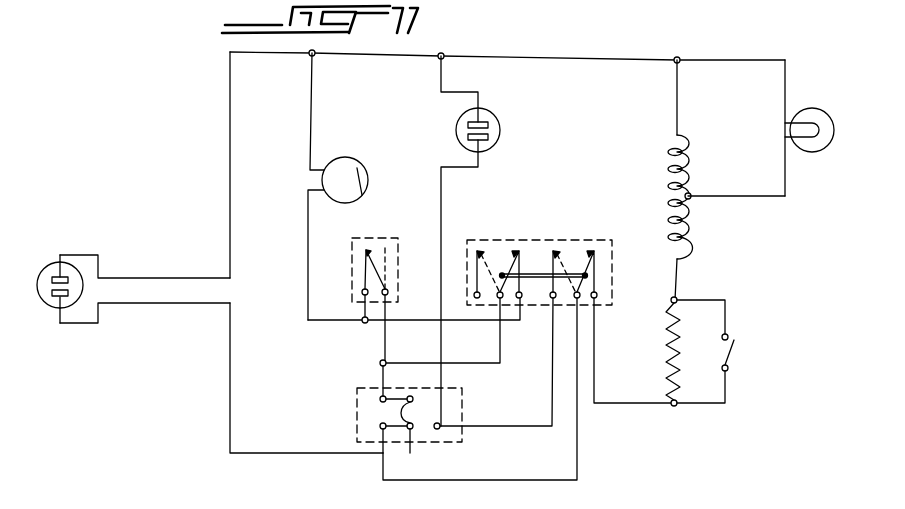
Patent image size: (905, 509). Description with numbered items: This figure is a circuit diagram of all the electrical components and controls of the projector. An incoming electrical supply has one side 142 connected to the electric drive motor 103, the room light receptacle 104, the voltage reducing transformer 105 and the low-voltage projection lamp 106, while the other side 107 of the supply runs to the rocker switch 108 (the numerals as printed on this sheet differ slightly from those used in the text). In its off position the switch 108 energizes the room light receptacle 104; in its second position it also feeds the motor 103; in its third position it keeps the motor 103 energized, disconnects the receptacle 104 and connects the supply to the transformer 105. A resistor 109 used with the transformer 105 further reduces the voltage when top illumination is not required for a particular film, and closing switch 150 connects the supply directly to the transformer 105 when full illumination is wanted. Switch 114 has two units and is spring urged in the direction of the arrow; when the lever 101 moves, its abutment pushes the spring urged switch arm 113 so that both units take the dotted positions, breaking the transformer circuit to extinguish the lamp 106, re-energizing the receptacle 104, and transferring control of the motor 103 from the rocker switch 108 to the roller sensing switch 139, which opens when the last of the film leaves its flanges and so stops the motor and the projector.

The lever 101 is at (50, 309).
The cord 107 is at (140, 303).
The one side of the incoming electrical supply 142 is at (230, 145).
The meter 103 is at (350, 162).
The lamp 104 is at (496, 122).
The roller sensing switch 139 is at (368, 240).
The switch 114 is at (531, 236).
The spring urged switch arm 113 is at (545, 270).
The coil 105 is at (668, 170).
The motor 106 is at (807, 108).
The resistor 109 is at (668, 356).
The switch 150 is at (738, 350).
The relay 108 is at (373, 436).